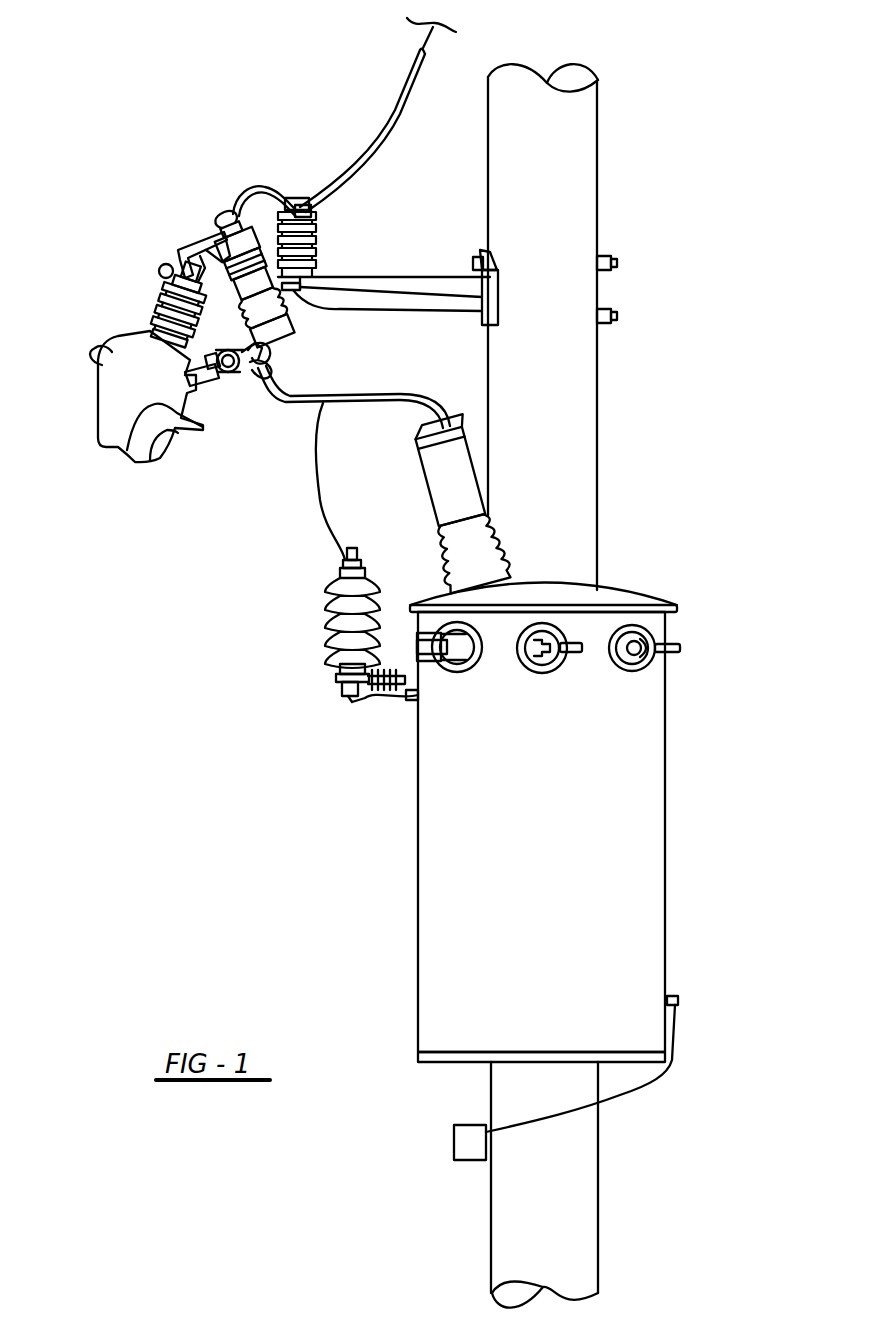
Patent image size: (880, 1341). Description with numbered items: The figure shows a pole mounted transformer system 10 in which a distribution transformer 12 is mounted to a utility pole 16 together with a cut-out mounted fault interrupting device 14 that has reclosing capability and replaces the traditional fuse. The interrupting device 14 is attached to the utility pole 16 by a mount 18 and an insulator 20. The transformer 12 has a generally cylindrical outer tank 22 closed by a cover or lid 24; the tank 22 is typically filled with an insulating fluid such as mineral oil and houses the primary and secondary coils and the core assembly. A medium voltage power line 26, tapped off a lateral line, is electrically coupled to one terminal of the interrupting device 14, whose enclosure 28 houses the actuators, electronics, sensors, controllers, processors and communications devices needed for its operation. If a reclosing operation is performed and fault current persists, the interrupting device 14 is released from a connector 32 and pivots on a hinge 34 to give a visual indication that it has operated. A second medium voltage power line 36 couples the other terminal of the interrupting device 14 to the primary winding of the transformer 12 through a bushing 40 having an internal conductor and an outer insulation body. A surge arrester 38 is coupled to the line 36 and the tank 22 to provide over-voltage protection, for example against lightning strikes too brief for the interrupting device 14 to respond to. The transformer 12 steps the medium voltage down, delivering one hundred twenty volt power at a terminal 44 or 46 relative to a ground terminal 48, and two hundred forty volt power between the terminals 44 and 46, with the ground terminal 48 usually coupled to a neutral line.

The pole mounted transformer system 10 is at (712, 173).
The distribution transformer 12 is at (540, 835).
The fault interrupting device 14 is at (117, 419).
The utility pole 16 is at (574, 170).
The mount 18 is at (398, 280).
The insulator 20 is at (241, 291).
The outer tank 22 is at (643, 729).
The cover or lid 24 is at (636, 599).
The power line 26 is at (410, 60).
The enclosure 28 is at (115, 418).
The connector 32 is at (183, 257).
The hinge 34 is at (240, 372).
The power line 36 is at (369, 394).
The surge arrester 38 is at (328, 610).
The bushing 40 is at (450, 483).
The terminal 44 is at (458, 672).
The terminal 46 is at (633, 675).
The ground terminal 48 is at (545, 675).